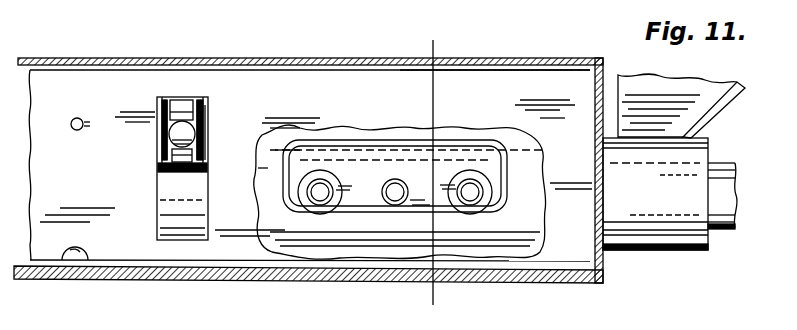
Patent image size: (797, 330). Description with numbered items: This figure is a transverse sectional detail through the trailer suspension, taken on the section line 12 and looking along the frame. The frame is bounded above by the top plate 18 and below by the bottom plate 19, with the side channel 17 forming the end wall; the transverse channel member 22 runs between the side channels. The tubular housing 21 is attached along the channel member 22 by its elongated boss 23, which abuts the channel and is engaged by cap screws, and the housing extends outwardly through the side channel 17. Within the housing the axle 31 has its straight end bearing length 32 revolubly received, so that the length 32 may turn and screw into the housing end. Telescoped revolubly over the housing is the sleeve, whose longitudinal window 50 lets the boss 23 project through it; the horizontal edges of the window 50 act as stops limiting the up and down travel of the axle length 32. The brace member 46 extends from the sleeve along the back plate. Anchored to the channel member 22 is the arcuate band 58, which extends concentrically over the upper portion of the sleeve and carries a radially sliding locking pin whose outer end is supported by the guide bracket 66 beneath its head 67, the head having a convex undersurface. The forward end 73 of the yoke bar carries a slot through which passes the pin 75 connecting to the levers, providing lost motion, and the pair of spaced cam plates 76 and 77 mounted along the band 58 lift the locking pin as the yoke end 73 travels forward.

The section line 12 is at (465, 40).
The side channel 17 is at (597, 113).
The top plate 18 is at (520, 65).
The bottom plate 19 is at (75, 278).
The tubular housing 21 is at (395, 207).
The transverse channel member 22 is at (255, 87).
The elongated boss 23 is at (348, 200).
The axle 31 is at (737, 193).
The straight end bearing length 32 is at (725, 230).
The brace member 46 is at (712, 103).
The window 50 is at (340, 155).
The arcuate band 58 is at (177, 168).
The guide bracket 66 is at (180, 152).
The head 67 is at (178, 133).
The yoke bar end 73 is at (183, 110).
The pin 75 is at (203, 118).
The cam plate 76 is at (168, 102).
The cam plate 77 is at (200, 102).